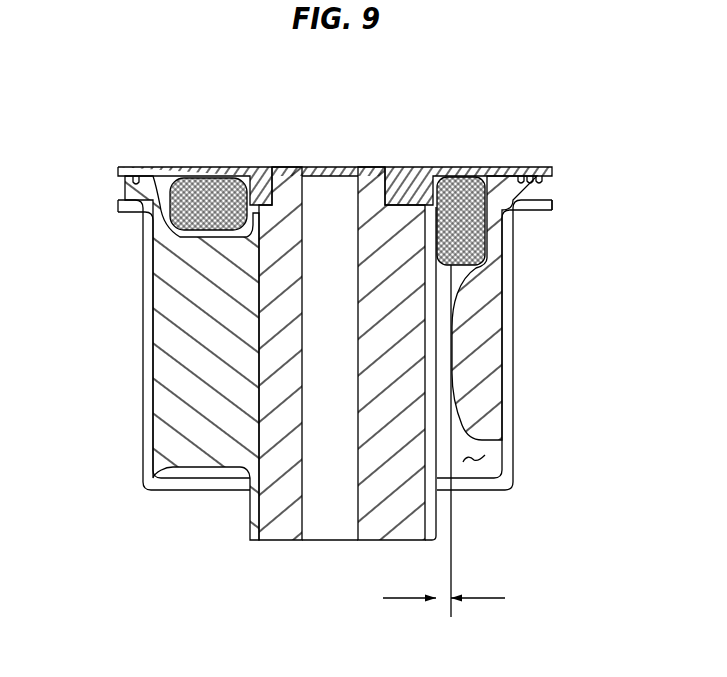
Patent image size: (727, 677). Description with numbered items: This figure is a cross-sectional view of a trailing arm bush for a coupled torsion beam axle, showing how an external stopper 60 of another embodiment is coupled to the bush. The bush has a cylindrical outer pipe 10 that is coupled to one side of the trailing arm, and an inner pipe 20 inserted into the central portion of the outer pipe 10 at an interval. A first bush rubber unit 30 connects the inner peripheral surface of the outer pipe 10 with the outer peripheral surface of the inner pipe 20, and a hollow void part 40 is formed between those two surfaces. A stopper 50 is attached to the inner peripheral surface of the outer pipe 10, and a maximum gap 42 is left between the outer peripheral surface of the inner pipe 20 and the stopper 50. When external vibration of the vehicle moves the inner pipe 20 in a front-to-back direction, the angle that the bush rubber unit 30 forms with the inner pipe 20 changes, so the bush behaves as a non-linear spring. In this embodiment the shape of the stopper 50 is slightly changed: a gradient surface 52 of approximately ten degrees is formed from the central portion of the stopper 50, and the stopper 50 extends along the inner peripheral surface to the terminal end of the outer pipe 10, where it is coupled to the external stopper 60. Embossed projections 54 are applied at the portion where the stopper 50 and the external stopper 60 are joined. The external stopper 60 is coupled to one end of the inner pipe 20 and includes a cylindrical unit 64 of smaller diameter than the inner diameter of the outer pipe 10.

The outer pipe 10 is at (150, 262).
The inner pipe 20 is at (280, 483).
The first bush rubber unit 30 is at (193, 333).
The hollow void part 40 is at (473, 463).
The maximum gap 42 is at (444, 621).
The stopper 50 is at (478, 370).
The gradient surface 52 is at (470, 295).
The embossed projections 54 is at (550, 183).
The external stopper 60 is at (408, 170).
The cylindrical unit 64 is at (462, 195).